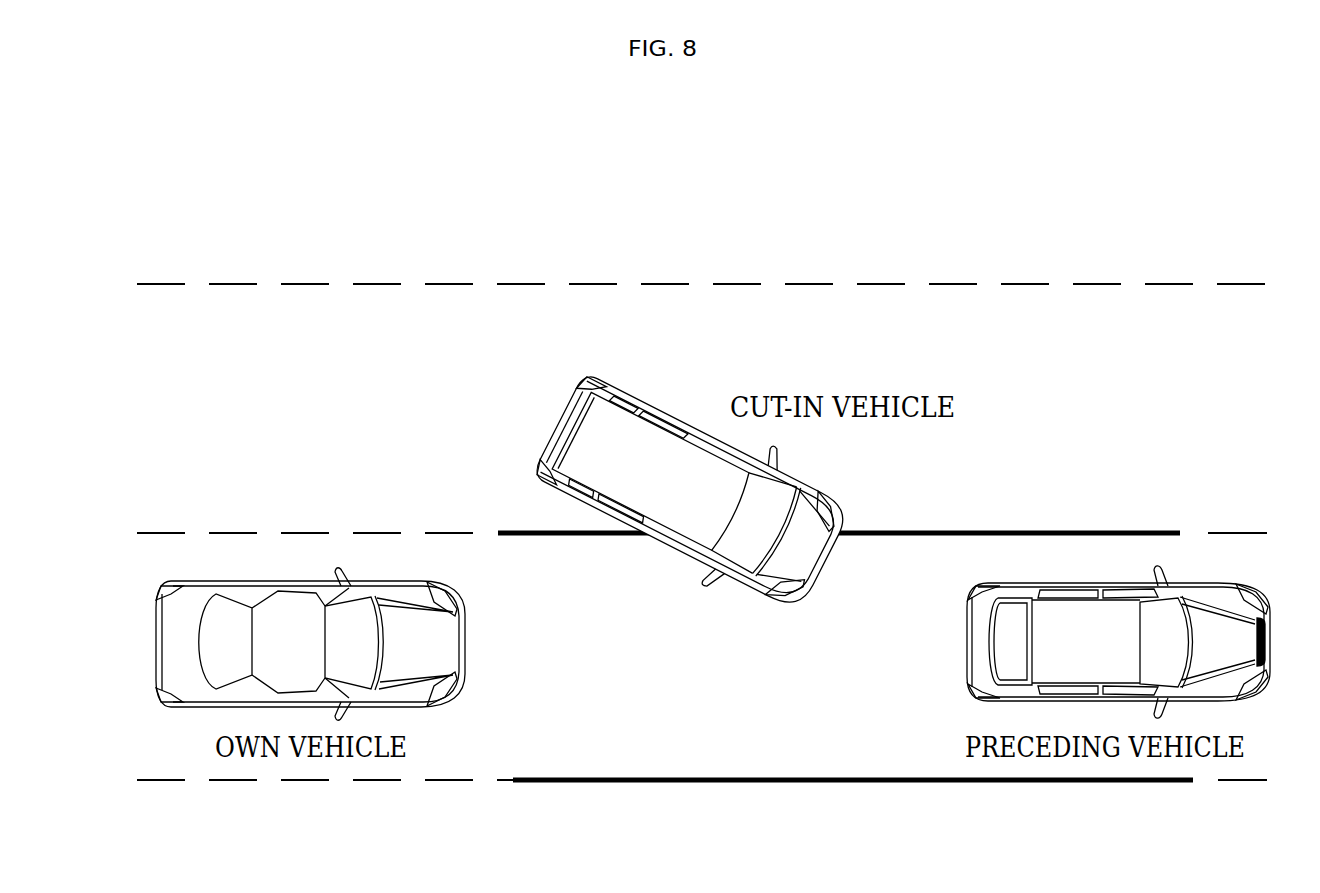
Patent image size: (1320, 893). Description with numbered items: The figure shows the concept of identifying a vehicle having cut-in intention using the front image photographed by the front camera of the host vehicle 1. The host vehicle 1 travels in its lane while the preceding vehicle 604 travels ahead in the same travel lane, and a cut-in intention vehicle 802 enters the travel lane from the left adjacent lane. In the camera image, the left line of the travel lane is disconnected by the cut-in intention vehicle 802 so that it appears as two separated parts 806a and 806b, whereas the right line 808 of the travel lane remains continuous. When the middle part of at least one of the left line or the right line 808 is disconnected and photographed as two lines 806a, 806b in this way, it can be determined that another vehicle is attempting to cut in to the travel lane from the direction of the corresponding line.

The host vehicle 1 is at (273, 560).
The cut-in intention vehicle 802 is at (677, 413).
The preceding vehicle 604 is at (1126, 585).
The first part of left line 806a is at (511, 528).
The second part of left line 806b is at (880, 528).
The right line 808 is at (815, 779).